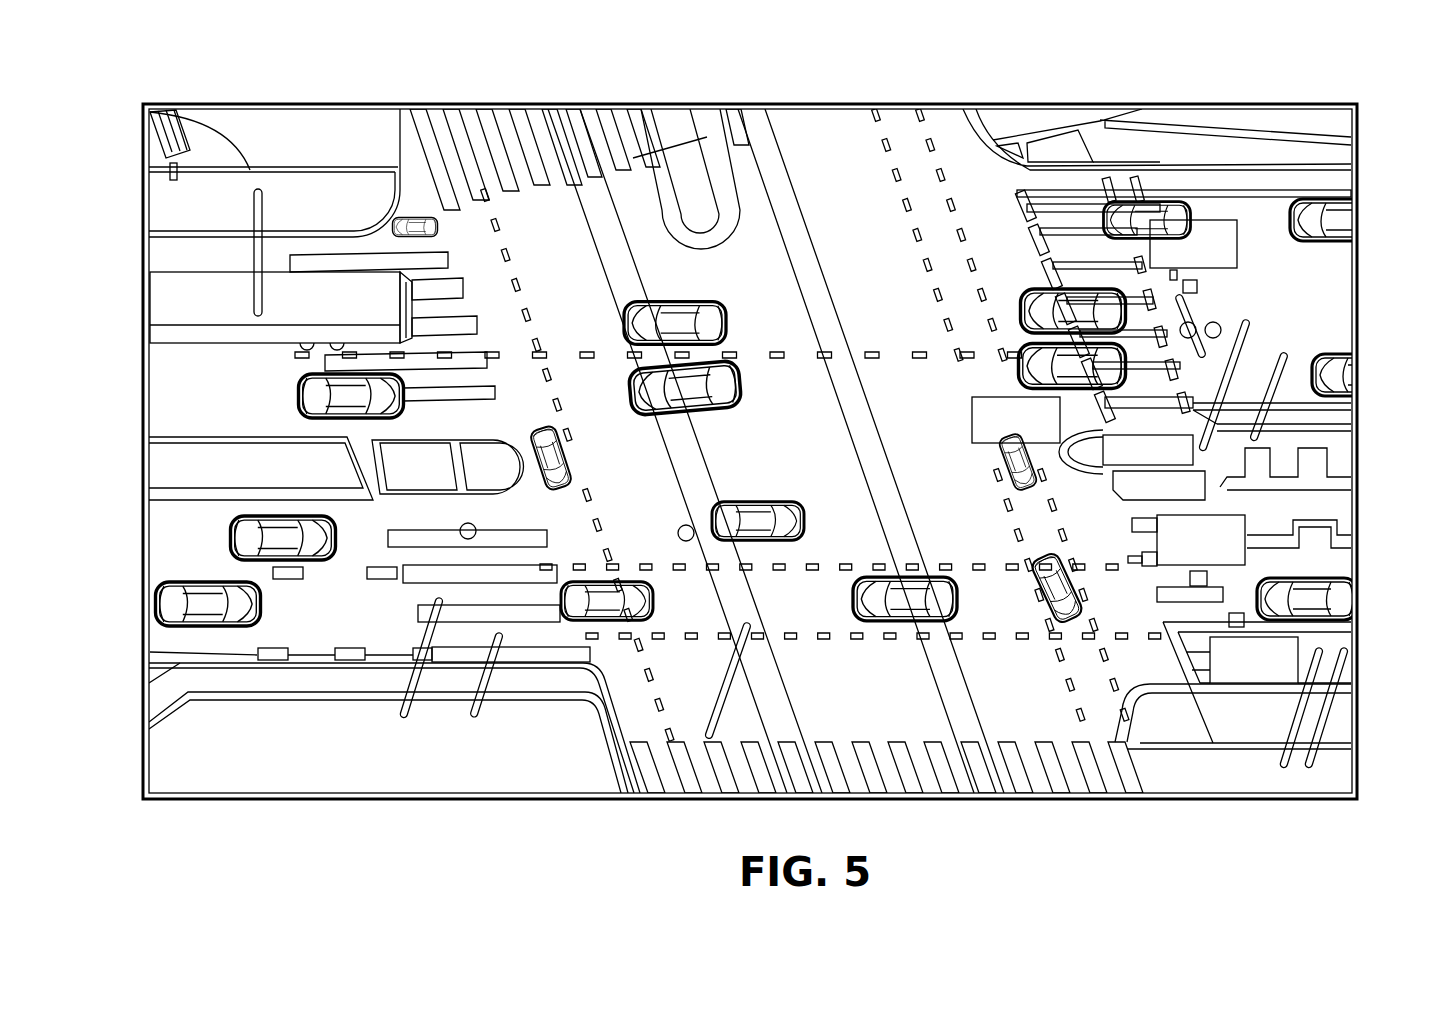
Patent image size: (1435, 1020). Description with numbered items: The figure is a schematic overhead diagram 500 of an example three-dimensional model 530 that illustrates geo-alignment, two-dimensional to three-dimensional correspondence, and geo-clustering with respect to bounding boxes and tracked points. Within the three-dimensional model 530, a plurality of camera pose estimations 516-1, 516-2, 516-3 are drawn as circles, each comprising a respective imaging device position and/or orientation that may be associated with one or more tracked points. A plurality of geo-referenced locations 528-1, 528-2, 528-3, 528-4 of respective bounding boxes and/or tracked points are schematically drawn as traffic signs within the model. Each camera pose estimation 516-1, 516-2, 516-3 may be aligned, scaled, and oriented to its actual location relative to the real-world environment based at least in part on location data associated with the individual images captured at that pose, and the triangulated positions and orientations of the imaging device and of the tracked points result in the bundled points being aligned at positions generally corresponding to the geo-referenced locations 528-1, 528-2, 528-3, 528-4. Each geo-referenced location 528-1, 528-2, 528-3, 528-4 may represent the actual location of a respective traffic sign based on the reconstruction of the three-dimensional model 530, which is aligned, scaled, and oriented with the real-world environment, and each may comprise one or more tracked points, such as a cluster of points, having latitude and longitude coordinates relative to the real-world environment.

The schematic overhead diagram 500 is at (1234, 66).
The three-dimensional model 530 is at (776, 106).
The camera pose estimation 516-1 is at (265, 518).
The camera pose estimation 516-2 is at (462, 525).
The camera pose estimation 516-3 is at (679, 529).
The geo-referenced location 528-1 is at (1222, 220).
The geo-referenced location 528-2 is at (972, 420).
The geo-referenced location 528-3 is at (1245, 524).
The geo-referenced location 528-4 is at (1235, 683).